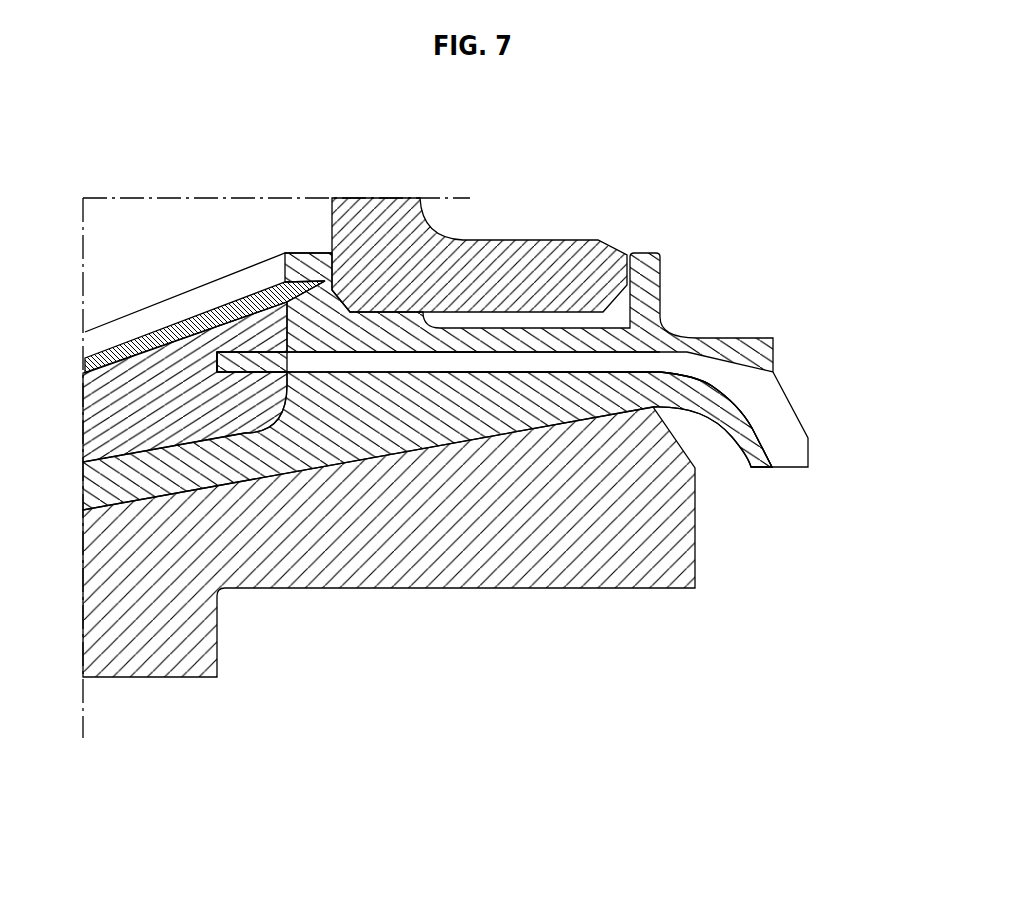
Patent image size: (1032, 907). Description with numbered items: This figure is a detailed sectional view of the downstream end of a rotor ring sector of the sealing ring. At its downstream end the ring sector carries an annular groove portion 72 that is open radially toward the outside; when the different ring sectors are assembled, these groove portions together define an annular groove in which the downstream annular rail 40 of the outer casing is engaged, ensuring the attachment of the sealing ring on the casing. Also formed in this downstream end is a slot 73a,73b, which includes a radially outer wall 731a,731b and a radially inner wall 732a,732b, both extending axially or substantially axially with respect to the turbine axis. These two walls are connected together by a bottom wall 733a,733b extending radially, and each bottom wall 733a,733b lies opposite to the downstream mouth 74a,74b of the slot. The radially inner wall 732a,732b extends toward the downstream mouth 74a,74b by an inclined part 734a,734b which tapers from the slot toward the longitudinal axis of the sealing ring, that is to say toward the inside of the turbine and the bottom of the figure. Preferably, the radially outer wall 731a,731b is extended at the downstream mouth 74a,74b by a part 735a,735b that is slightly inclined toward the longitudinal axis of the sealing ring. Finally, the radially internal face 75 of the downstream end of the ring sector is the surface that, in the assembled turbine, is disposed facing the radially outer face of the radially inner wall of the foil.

The downstream annular rail 40 is at (520, 285).
The annular groove portion 72 is at (613, 318).
The slot 73a,73b is at (475, 362).
The radially outer wall 731a,731b is at (388, 356).
The radially inner wall 732a,732b is at (547, 370).
The bottom wall 733a,733b is at (217, 363).
The inclined part 734a,734b is at (753, 415).
The slightly inclined part 735a,735b is at (728, 365).
The downstream mouth 74a,74b is at (797, 402).
The radially internal face 75 is at (758, 468).